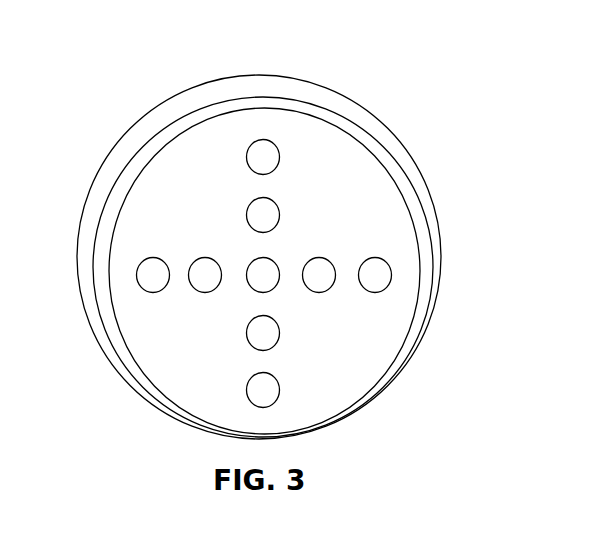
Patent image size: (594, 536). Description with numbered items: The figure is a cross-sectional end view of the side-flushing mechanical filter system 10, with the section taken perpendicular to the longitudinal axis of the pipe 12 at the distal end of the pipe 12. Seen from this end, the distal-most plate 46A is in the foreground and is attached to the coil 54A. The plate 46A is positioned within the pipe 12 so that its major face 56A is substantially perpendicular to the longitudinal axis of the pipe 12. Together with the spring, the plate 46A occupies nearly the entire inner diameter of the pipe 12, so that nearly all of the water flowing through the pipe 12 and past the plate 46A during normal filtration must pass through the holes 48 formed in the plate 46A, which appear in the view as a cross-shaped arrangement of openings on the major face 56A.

The side-flushing mechanical filter system 10 is at (379, 93).
The pipe 12 is at (400, 140).
The coil 54A is at (418, 180).
The distal-most plate 46A is at (418, 240).
The major face 56A is at (403, 317).
The holes 48 is at (268, 220).